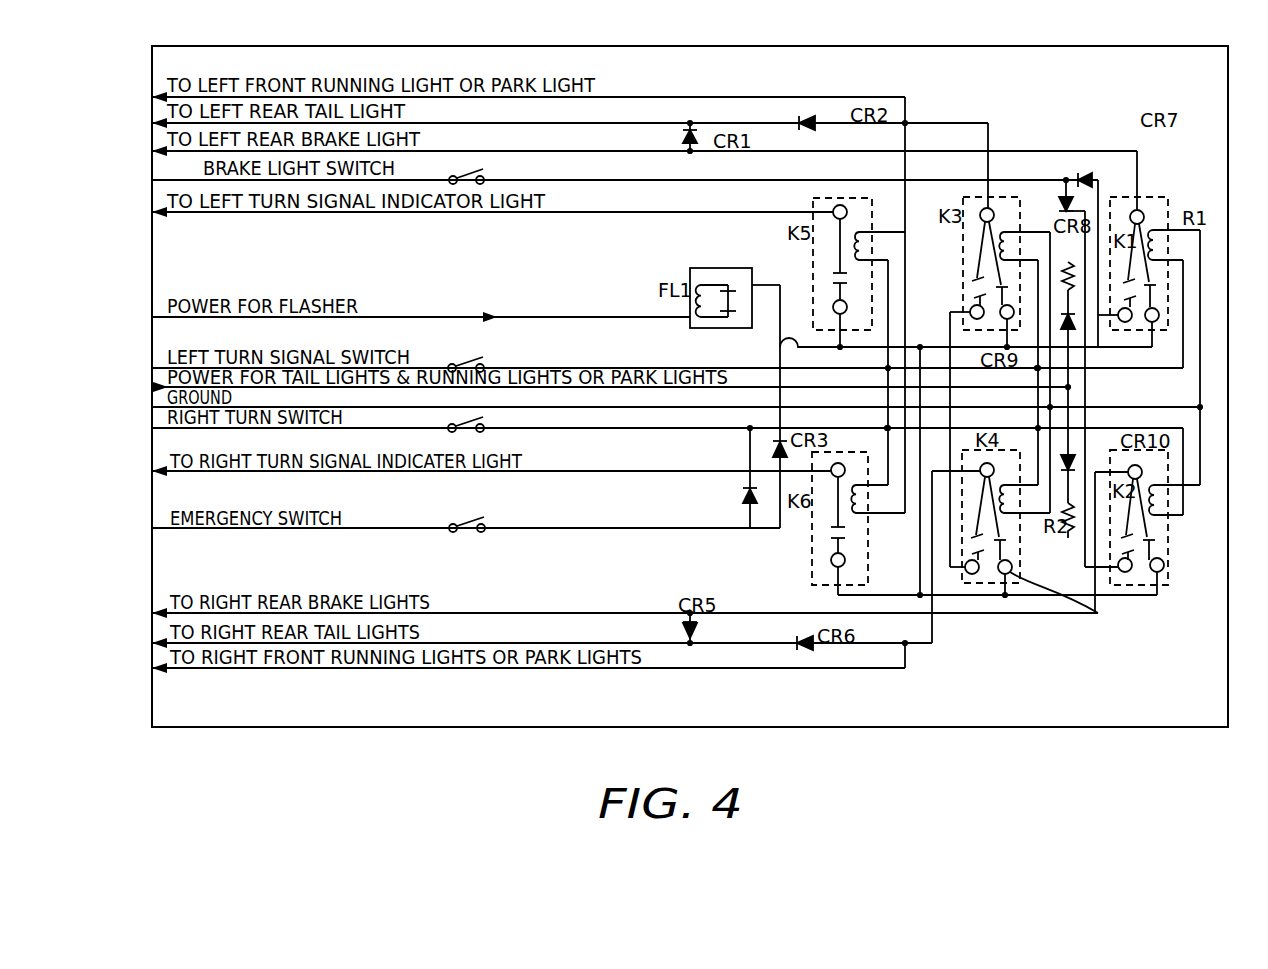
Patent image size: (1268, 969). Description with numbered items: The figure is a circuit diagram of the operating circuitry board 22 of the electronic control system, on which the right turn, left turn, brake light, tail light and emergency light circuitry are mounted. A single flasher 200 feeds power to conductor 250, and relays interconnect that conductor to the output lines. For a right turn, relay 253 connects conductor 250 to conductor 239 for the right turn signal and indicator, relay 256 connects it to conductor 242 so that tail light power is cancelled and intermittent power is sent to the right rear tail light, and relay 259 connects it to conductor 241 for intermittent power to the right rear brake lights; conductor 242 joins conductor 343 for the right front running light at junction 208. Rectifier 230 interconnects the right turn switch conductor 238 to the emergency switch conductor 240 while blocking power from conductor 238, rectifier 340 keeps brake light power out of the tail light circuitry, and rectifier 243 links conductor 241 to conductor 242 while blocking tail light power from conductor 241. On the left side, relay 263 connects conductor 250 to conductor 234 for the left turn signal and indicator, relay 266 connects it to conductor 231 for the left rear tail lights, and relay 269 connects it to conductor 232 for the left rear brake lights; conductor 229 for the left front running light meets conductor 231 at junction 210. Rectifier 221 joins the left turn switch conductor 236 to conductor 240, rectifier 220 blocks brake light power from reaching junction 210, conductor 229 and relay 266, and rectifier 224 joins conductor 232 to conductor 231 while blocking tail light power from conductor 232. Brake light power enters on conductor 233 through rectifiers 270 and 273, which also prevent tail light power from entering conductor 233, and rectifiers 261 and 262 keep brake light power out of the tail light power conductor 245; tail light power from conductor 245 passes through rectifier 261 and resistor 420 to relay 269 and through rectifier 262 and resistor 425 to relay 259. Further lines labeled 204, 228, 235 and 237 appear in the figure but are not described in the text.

The operating circuitry board 22 is at (1124, 90).
The flasher 200 is at (757, 254).
The flasher output conductor 204 is at (785, 368).
The junction 208 is at (907, 647).
The junction 210 is at (907, 124).
The rectifier 220 is at (808, 120).
The rectifier 221 is at (776, 441).
The rectifier 224 is at (700, 140).
The conductor 228 is at (1088, 394).
The conductor 229 is at (797, 93).
The rectifier 230 is at (747, 498).
The conductor 231 is at (548, 118).
The conductor 232 is at (690, 155).
The conductor 233 is at (663, 182).
The conductor 234 is at (617, 212).
The flasher power line 235 is at (405, 317).
The conductor 236 is at (621, 367).
The ground line 237 is at (636, 409).
The conductor 238 is at (580, 430).
The conductor 239 is at (540, 471).
The conductor 240 is at (532, 527).
The conductor 241 is at (587, 613).
The conductor 242 is at (580, 643).
The rectifier 243 is at (695, 627).
The conductor 245 is at (756, 390).
The conductor 250 is at (778, 343).
The relay 253 is at (821, 569).
The relay 256 is at (1102, 614).
The relay 259 is at (1162, 580).
The rectifier 261 is at (1062, 325).
The rectifier 262 is at (1072, 455).
The relay 263 is at (871, 200).
The relay 266 is at (978, 237).
The relay 269 is at (1165, 208).
The rectifier 270 is at (1093, 158).
The rectifier 273 is at (1073, 198).
The rectifier 340 is at (808, 647).
The conductor 343 is at (807, 672).
The resistor 420 is at (1090, 398).
The resistor 425 is at (1072, 540).